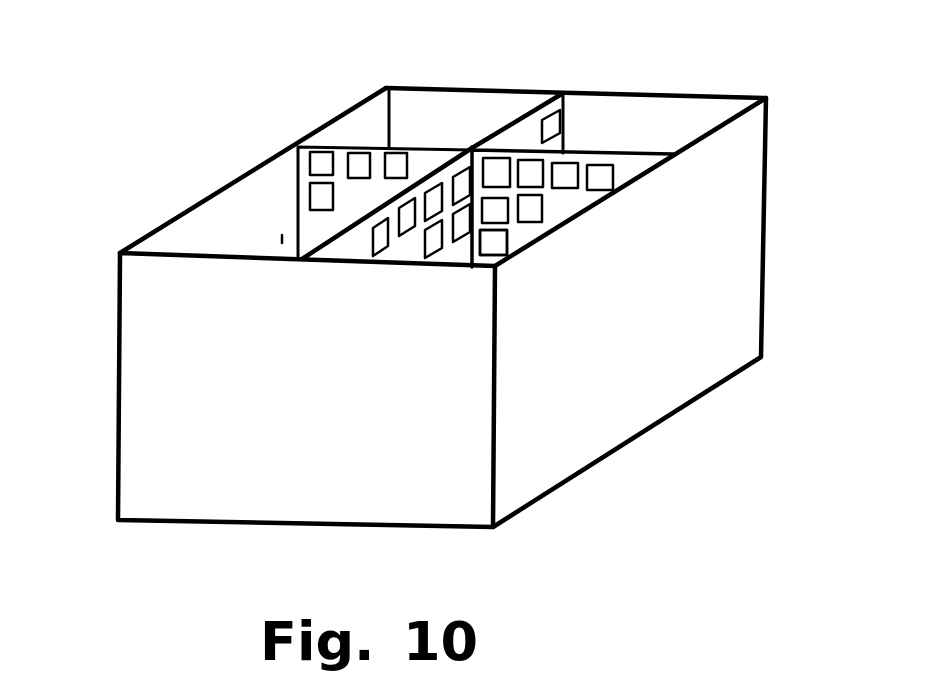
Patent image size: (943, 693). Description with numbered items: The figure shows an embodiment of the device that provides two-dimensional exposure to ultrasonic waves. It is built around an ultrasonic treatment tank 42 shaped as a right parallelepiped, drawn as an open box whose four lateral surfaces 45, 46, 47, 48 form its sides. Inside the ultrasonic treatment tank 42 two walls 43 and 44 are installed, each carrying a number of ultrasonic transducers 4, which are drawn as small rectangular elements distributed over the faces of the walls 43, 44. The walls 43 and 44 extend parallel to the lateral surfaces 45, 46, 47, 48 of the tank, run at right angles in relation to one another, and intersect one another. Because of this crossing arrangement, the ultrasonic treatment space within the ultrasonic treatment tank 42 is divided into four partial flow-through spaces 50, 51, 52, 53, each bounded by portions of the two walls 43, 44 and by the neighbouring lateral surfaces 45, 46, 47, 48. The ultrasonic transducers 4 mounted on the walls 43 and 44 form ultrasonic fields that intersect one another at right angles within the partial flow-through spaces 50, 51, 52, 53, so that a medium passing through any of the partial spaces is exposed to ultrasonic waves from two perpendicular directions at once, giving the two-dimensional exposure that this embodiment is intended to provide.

The ultrasonic transducers 4 is at (320, 170).
The ultrasonic treatment tank 42 is at (459, 282).
The wall 43 is at (367, 145).
The wall 44 is at (513, 120).
The lateral surface 45 is at (663, 363).
The lateral surface 46 is at (155, 448).
The lateral surface 47 is at (210, 197).
The lateral surface 48 is at (680, 95).
The partial flow-through space 50 is at (474, 226).
The partial flow-through space 51 is at (282, 243).
The partial flow-through space 52 is at (443, 123).
The partial flow-through space 53 is at (628, 135).